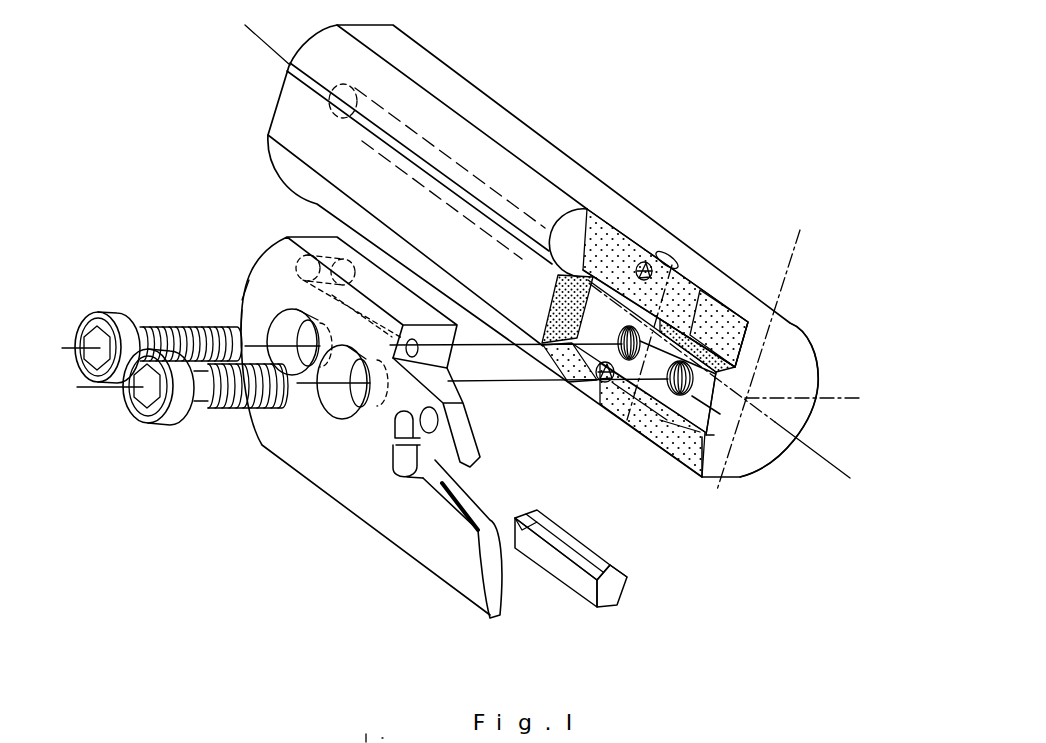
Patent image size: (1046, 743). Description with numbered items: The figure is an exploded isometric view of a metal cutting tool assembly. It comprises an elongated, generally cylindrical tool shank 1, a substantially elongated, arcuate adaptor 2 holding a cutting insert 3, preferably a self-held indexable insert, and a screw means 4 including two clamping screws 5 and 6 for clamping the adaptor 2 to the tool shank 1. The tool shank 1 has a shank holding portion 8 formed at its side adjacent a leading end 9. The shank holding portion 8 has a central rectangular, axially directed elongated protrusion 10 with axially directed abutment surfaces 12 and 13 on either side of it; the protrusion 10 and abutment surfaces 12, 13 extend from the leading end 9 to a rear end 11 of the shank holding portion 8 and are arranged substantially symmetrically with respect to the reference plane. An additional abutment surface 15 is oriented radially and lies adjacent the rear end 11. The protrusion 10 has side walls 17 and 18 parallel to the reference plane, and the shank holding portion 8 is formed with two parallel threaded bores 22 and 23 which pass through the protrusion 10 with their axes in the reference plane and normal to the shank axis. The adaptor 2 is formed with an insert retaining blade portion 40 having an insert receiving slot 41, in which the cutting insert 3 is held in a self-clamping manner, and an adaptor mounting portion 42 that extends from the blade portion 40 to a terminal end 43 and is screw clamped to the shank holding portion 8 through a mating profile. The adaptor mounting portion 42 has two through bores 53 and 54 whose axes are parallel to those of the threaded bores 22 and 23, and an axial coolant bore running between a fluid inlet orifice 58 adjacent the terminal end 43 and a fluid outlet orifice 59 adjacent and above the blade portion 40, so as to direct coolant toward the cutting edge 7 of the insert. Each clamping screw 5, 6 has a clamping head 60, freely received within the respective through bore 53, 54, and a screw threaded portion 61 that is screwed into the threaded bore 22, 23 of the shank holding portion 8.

The tool shank 1 is at (442, 80).
The adaptor 2 is at (435, 565).
The cutting insert 3 is at (610, 590).
The screw means 4 is at (321, 405).
The clamping screw 5 is at (372, 414).
The clamping screw 6 is at (96, 352).
The cutting edge 7 is at (613, 571).
The shank holding portion 8 is at (672, 256).
The leading end 9 is at (812, 355).
The protrusion 10 is at (572, 388).
The rear end 11 is at (584, 222).
The abutment surface 12 is at (606, 228).
The abutment surface 13 is at (693, 458).
The additional abutment surface 15 is at (552, 300).
The side wall 17 is at (712, 322).
The side wall 18 is at (718, 450).
The threaded bore 22 is at (675, 396).
The threaded bore 23 is at (607, 385).
The insert retaining blade portion 40 is at (397, 518).
The insert receiving slot 41 is at (440, 462).
The adaptor mounting portion 42 is at (312, 292).
The terminal end 43 is at (263, 312).
The through bore 53 is at (340, 407).
The through bore 54 is at (297, 374).
The fluid inlet orifice 58 is at (343, 270).
The fluid outlet orifice 59 is at (418, 352).
The clamping head 60 is at (165, 412).
The screw threaded portion 61 is at (227, 403).